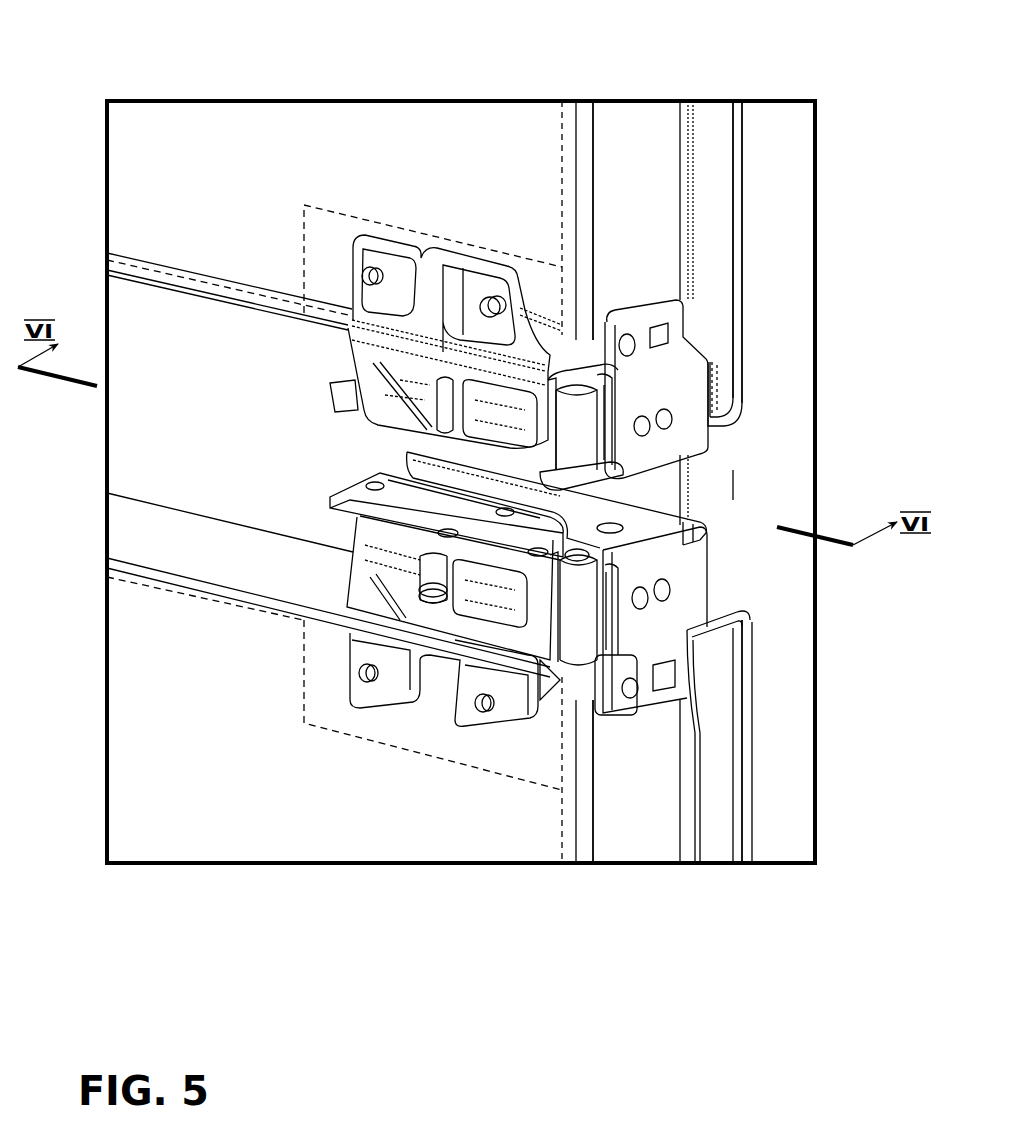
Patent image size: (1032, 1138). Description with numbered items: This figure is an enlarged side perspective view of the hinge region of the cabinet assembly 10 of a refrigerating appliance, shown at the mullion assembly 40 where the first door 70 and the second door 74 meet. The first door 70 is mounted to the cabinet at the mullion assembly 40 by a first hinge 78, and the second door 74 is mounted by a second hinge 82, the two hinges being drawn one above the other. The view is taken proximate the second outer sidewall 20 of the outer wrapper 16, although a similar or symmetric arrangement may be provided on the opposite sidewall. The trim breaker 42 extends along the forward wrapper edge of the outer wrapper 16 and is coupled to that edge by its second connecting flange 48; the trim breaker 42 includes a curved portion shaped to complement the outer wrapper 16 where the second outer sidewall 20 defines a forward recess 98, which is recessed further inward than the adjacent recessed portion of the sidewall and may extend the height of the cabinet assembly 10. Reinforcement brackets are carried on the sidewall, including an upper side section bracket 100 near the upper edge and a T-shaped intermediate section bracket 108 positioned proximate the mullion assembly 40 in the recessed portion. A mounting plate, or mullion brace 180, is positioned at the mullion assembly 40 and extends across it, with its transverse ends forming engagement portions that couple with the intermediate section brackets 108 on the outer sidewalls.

The cabinet assembly 10 is at (847, 173).
The outer wrapper 16 is at (755, 432).
The second outer sidewall 20 is at (727, 642).
The mullion assembly 40 is at (180, 345).
The trim breaker 42 is at (710, 245).
The second connecting flange 48 is at (710, 137).
The first door 70 is at (245, 193).
The second door 74 is at (350, 790).
The first hinge 78 is at (663, 381).
The second hinge 82 is at (645, 642).
The forward recess 98 is at (722, 383).
The upper side section bracket 100 is at (717, 388).
The intermediate section bracket 108 is at (740, 511).
The mounting plate 180 is at (213, 420).